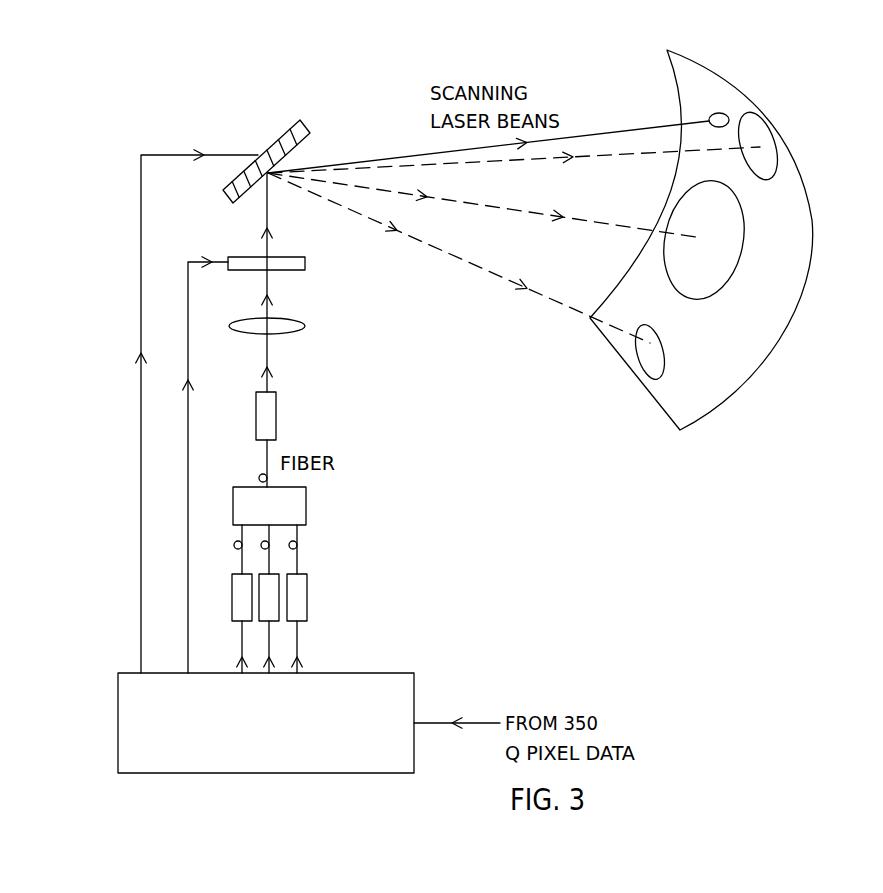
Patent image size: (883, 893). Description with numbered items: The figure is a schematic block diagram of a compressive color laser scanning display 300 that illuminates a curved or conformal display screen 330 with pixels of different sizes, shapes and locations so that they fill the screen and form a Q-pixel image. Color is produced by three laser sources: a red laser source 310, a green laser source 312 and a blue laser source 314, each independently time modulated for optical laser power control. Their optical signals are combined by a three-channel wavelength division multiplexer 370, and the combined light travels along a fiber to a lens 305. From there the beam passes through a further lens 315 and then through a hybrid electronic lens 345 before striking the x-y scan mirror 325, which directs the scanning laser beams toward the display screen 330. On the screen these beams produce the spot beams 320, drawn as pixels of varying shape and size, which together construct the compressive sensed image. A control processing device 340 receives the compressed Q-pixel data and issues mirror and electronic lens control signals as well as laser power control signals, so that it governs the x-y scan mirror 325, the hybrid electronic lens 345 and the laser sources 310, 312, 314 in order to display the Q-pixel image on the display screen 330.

The compressive color laser scanning display 300 is at (155, 97).
The lens 305 is at (277, 438).
The laser source 310 is at (312, 604).
The laser source 312 is at (269, 597).
The laser source 314 is at (297, 597).
The lens 315 is at (306, 326).
The spot beam 320 is at (725, 114).
The x-y scan mirror 325 is at (307, 135).
The display screen 330 is at (705, 62).
The control processing device 340 is at (118, 695).
The hybrid electronic lens 345 is at (306, 265).
The wavelength division multiplexer 370 is at (307, 517).